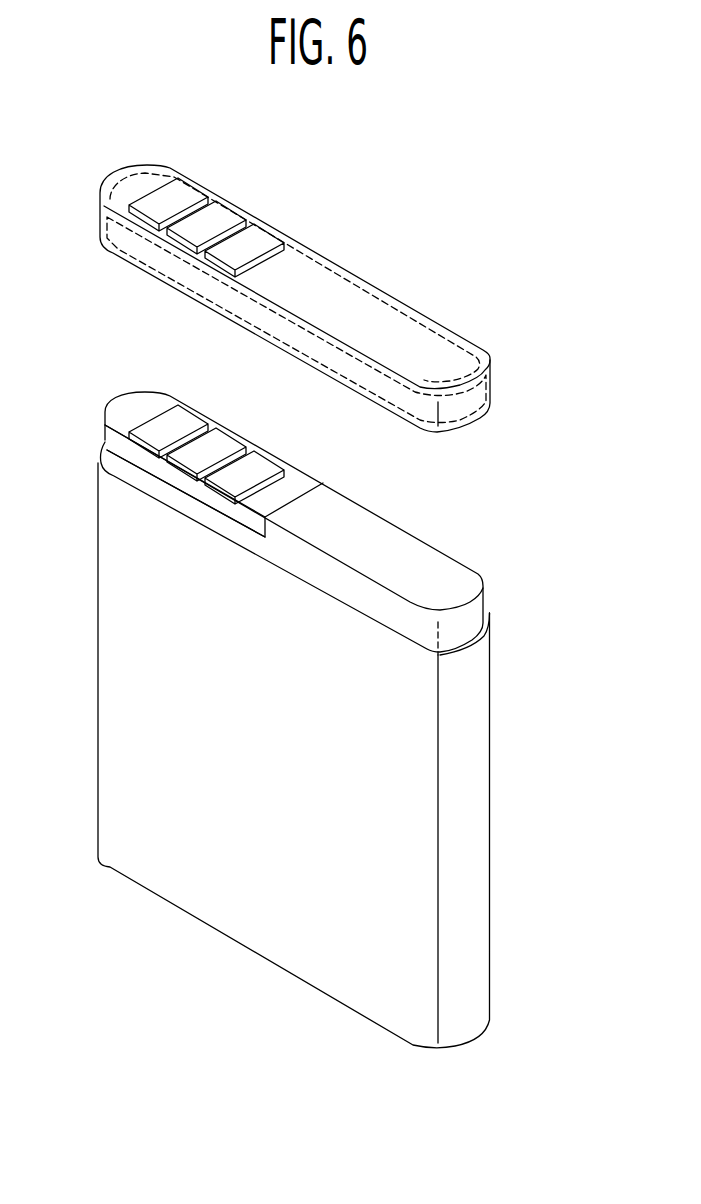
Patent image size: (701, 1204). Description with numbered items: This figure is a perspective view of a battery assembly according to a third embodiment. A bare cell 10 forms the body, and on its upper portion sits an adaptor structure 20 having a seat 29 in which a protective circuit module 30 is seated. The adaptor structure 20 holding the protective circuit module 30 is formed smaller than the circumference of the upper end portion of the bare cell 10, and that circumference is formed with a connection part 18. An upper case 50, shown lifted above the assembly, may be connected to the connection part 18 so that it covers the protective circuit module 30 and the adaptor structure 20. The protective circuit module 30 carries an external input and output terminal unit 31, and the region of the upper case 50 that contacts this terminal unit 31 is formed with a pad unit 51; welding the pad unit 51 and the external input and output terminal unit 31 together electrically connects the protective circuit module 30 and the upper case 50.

The bare cell 10 is at (468, 880).
The connection part 18 is at (488, 626).
The adaptor structure 20 is at (398, 543).
The seat 29 is at (155, 476).
The protective circuit module 30 is at (295, 475).
The external input and output terminal unit 31 is at (178, 413).
The upper case 50 is at (400, 327).
The pad unit 51 is at (188, 193).